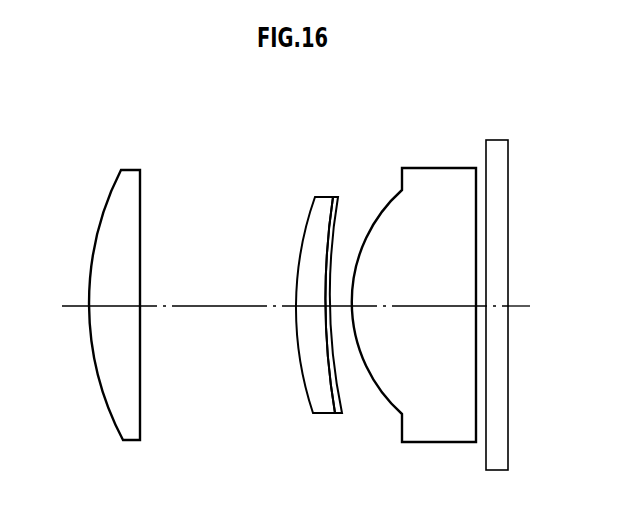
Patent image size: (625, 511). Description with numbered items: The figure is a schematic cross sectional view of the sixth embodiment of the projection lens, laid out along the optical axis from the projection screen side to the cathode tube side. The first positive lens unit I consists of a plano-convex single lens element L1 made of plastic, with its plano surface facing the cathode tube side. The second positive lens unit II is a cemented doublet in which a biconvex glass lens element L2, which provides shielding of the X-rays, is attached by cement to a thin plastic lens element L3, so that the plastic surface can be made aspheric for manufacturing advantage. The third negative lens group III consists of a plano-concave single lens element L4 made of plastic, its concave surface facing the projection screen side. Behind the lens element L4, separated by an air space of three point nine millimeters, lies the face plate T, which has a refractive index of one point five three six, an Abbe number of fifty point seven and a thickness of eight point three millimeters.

The first positive lens unit I is at (92, 157).
The second positive lens unit II is at (303, 157).
The third negative lens group III is at (393, 157).
The plano-convex single lens element L1 is at (128, 432).
The biconvex glass lens element L2 is at (316, 413).
The thin plastic lens element L3 is at (342, 415).
The plano-concave single lens element L4 is at (422, 433).
The face plate T is at (497, 450).